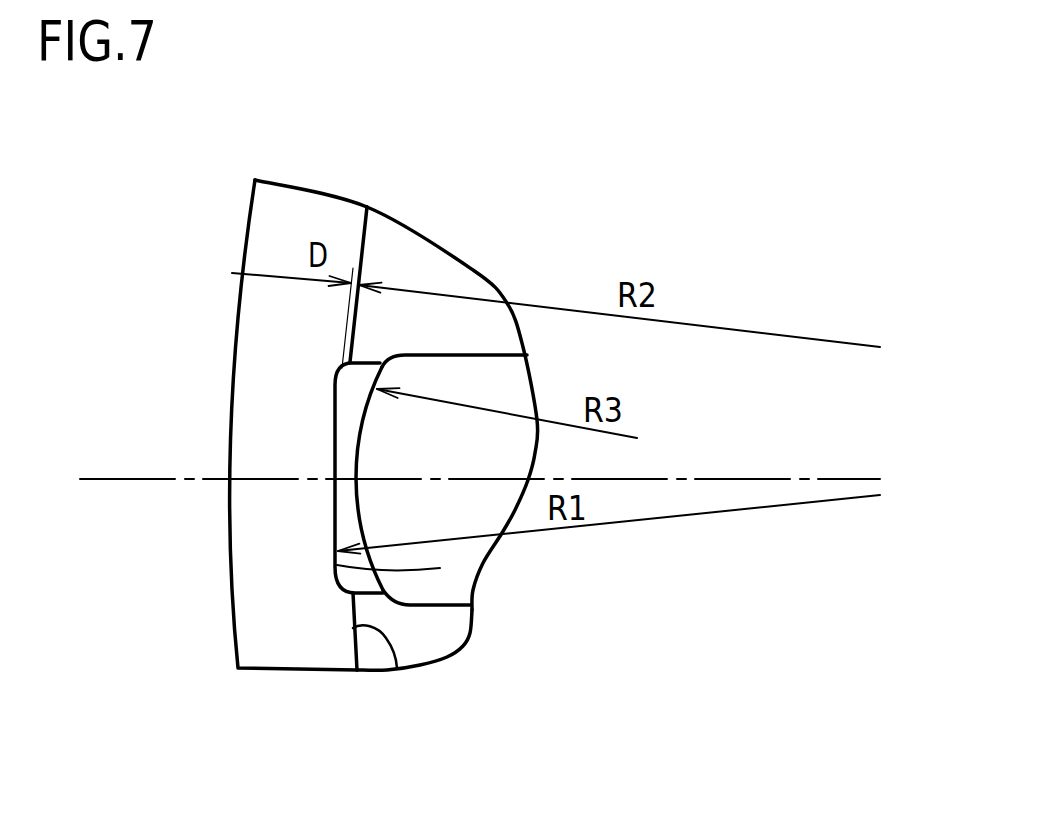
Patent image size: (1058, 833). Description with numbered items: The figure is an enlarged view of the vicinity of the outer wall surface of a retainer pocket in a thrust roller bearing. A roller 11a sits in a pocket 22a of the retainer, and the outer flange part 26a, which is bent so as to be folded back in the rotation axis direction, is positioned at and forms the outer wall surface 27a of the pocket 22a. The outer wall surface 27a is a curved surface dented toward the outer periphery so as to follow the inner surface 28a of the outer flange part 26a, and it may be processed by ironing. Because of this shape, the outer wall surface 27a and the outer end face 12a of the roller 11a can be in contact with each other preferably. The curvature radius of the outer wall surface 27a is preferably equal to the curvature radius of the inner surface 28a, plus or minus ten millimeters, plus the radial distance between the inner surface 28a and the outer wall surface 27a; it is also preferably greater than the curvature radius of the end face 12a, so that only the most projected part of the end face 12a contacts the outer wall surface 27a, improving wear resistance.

The outer flange part 26a is at (287, 213).
The pocket 22a is at (353, 389).
The end face 12a is at (357, 510).
The roller 11a is at (497, 380).
The outer wall surface 27a is at (440, 568).
The inner surface 28a is at (397, 668).